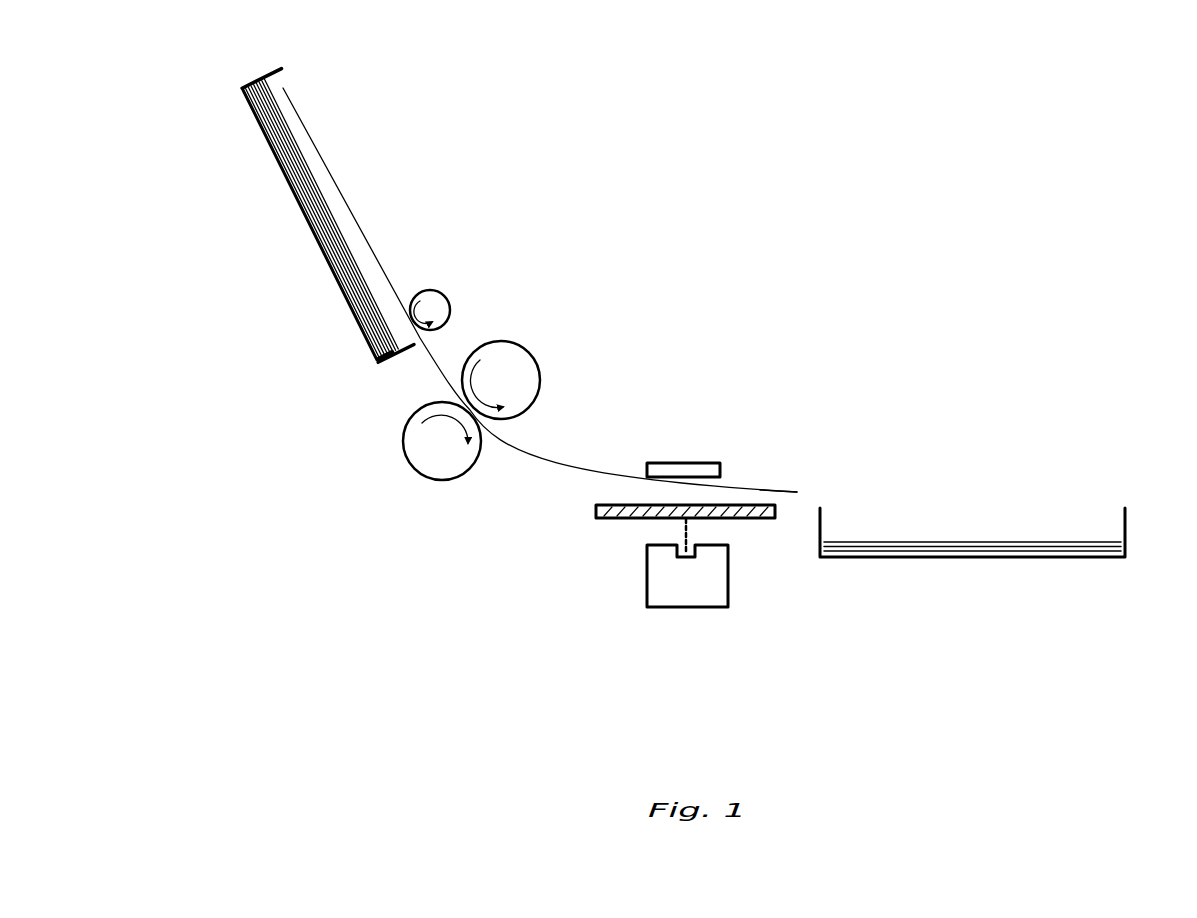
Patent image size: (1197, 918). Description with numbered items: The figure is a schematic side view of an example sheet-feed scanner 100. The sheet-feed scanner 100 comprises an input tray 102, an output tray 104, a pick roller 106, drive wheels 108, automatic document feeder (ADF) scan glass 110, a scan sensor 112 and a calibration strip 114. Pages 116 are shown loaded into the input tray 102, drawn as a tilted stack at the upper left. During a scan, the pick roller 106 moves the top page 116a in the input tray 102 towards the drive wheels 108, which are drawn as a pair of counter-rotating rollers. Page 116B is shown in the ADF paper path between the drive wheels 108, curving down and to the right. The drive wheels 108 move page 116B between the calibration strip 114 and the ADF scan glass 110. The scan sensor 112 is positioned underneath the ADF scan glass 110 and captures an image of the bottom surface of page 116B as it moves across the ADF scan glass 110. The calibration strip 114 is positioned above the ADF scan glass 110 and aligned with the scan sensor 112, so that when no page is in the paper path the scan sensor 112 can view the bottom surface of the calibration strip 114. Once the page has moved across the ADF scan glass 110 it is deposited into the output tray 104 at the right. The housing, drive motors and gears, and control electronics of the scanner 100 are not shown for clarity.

The sheet-feed scanner 100 is at (770, 186).
The input tray 102 is at (256, 80).
The output tray 104 is at (1072, 558).
The pick roller 106 is at (450, 298).
The drive wheels 108 is at (533, 357).
The ADF scan glass 110 is at (605, 519).
The scan sensor 112 is at (730, 583).
The calibration strip 114 is at (711, 463).
The pages 116 is at (393, 370).
The top page 116a is at (340, 187).
The page 116B is at (790, 492).